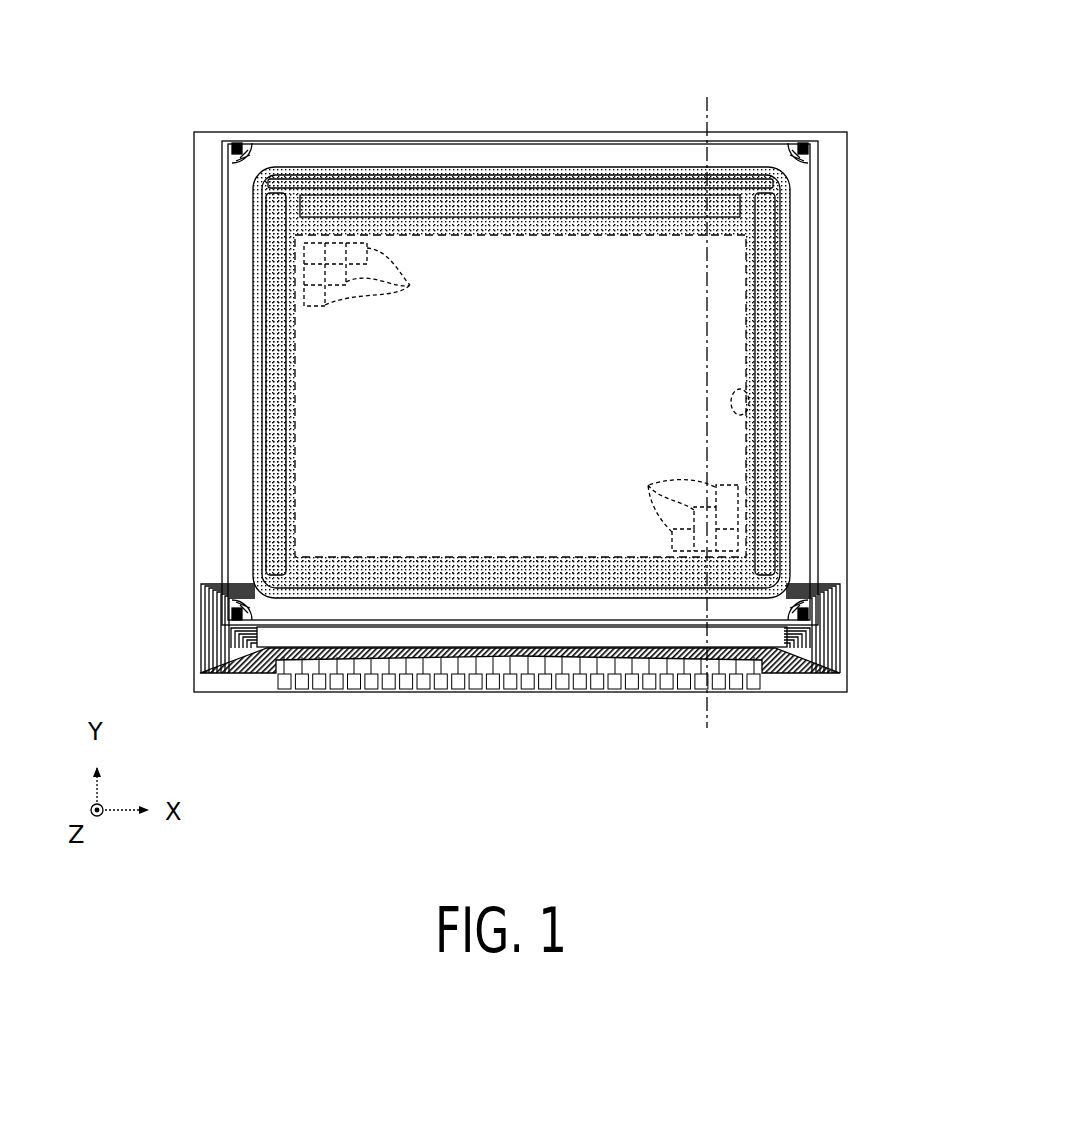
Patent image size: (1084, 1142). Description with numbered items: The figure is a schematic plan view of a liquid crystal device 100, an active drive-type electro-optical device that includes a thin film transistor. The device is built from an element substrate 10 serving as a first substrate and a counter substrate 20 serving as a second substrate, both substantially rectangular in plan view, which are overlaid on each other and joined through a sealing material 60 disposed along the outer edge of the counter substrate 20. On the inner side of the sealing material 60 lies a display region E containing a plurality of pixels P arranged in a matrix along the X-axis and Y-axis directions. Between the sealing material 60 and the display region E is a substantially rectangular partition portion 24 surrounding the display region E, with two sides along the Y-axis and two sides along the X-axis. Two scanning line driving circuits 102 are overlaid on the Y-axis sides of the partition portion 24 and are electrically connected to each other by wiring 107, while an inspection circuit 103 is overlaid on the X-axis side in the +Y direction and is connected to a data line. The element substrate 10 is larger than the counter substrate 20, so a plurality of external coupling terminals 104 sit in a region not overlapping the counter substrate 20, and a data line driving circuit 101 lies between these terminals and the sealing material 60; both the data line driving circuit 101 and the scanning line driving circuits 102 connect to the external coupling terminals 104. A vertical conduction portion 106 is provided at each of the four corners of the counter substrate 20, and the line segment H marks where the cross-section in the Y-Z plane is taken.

The liquid crystal device 100 is at (838, 95).
The element substrate 10 is at (318, 131).
The counter substrate 20 is at (424, 141).
The sealing material 60 is at (800, 277).
The scanning line driving circuit 102 is at (275, 314).
The inspection circuit 103 is at (614, 195).
The wiring 107 is at (527, 178).
The vertical conduction portion 106 is at (232, 150).
The data line driving circuit 101 is at (268, 630).
The external coupling terminals 104 is at (378, 674).
The partition portion 24 is at (519, 573).
The pixel P is at (521, 397).
The display region E is at (750, 395).
The line segment H-H' H is at (718, 106).